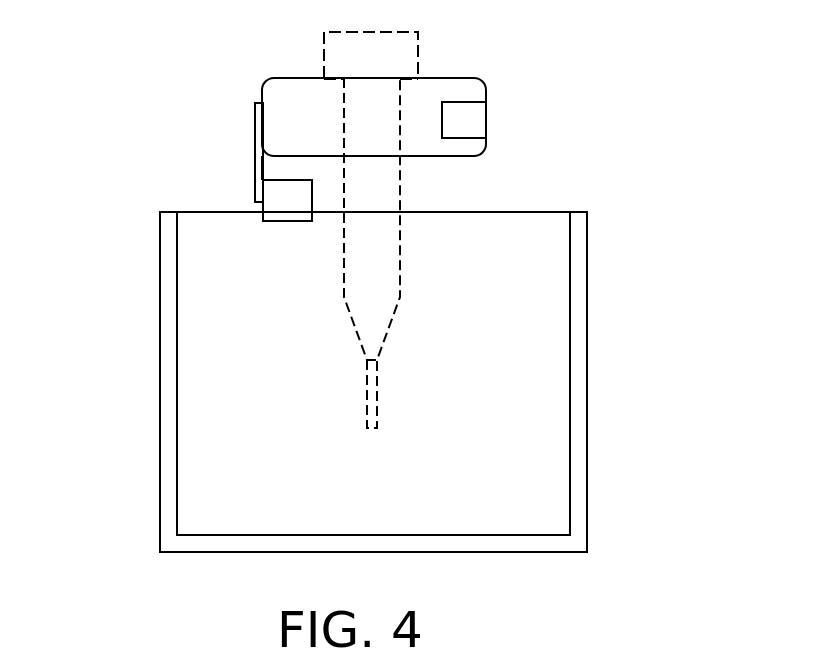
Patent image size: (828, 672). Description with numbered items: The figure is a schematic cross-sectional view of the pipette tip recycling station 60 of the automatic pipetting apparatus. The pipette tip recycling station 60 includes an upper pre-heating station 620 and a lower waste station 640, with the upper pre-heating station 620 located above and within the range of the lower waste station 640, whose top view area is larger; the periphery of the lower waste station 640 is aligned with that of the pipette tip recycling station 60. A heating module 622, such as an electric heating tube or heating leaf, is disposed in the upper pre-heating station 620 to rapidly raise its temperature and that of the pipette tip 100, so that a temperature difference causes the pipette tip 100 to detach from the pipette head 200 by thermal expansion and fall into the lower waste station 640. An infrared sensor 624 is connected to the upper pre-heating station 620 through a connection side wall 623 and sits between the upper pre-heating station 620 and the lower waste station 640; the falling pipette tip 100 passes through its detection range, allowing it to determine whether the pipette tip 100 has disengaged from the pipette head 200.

The pipette tip recycling station 60 is at (698, 554).
The pipette tip 100 is at (393, 223).
The pipette head 200 is at (412, 52).
The upper pre-heating station 620 is at (298, 83).
The heating module 622 is at (478, 115).
The connection side wall 623 is at (257, 113).
The infrared sensor 624 is at (286, 207).
The lower waste station 640 is at (213, 358).